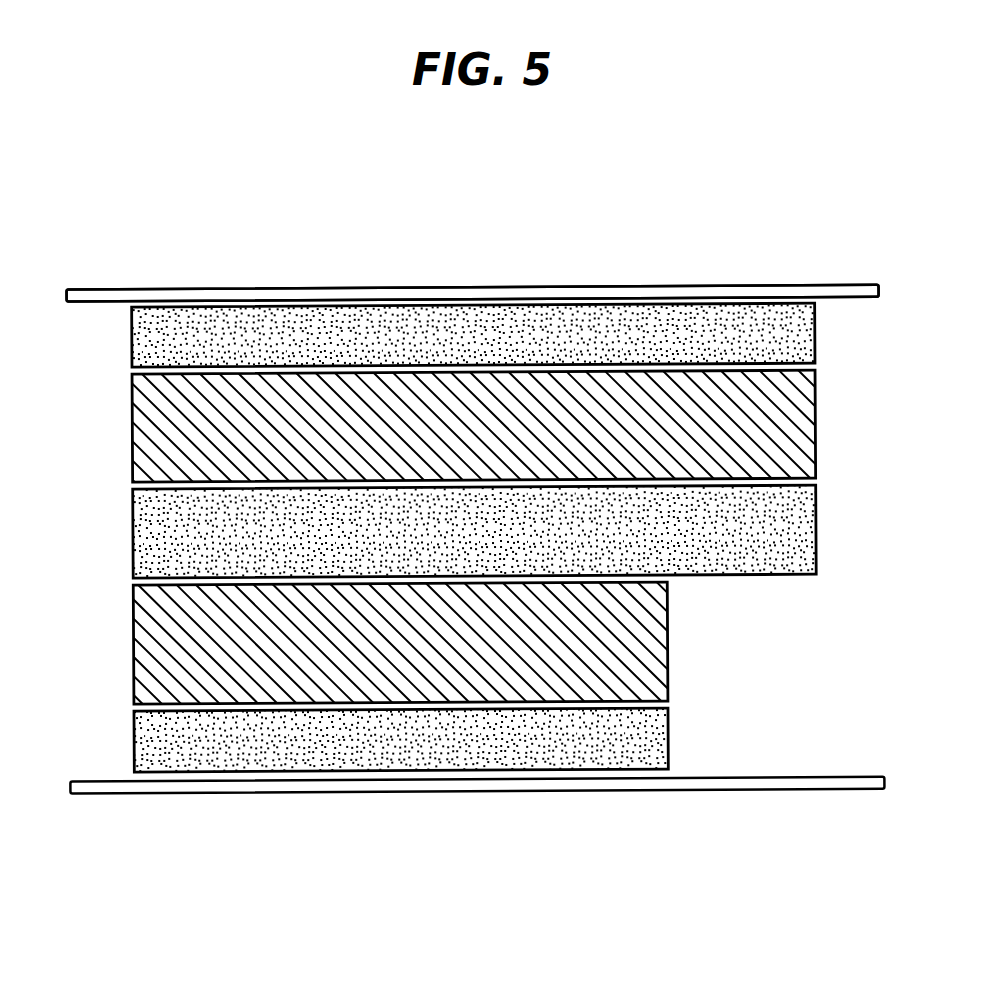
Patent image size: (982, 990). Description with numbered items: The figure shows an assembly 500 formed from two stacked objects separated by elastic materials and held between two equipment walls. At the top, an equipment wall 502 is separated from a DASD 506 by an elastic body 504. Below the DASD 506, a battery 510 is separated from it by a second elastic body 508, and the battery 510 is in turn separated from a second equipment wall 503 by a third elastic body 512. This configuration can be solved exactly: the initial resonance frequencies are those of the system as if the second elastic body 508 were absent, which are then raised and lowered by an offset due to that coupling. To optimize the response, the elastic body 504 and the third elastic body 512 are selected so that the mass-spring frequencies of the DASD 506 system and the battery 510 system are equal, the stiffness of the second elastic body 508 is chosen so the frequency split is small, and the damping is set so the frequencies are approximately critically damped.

The assembly 500 is at (680, 236).
The equipment wall 502 is at (107, 289).
The second equipment wall 503 is at (125, 794).
The elastic body 504 is at (133, 333).
The DASD 506 is at (133, 442).
The second elastic body 508 is at (133, 550).
The battery 510 is at (133, 663).
The third elastic body 512 is at (133, 744).